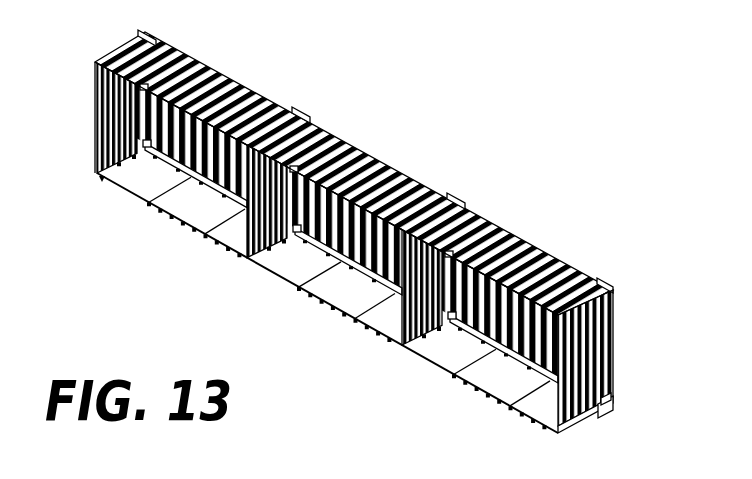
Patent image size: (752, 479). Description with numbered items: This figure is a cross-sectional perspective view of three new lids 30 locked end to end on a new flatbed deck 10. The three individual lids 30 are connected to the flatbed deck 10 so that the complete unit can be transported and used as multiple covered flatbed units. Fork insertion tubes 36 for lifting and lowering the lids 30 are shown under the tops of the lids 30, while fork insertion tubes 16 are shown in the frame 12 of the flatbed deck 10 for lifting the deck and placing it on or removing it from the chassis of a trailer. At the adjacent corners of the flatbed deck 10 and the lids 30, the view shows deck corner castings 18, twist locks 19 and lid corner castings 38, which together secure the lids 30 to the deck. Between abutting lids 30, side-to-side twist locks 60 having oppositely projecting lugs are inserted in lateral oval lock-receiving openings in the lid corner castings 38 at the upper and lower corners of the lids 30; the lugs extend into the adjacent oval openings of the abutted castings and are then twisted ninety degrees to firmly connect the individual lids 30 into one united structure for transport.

The flatbed deck 10 is at (387, 252).
The frame 12 is at (237, 252).
The fork insertion tubes 16 is at (287, 288).
The deck corner castings 18 is at (613, 413).
The twist locks 19 is at (613, 408).
The lids 30 is at (525, 242).
The fork insertion tubes 36 is at (143, 92).
The lid corner castings 38 is at (610, 407).
The twist locks 60 is at (495, 350).